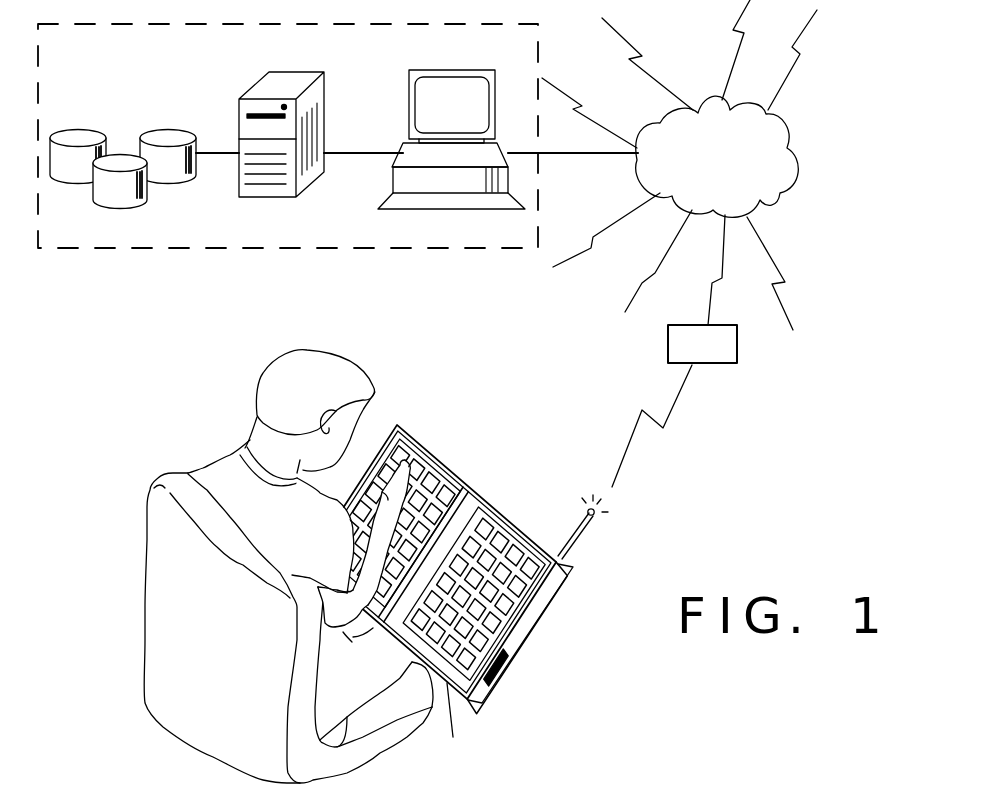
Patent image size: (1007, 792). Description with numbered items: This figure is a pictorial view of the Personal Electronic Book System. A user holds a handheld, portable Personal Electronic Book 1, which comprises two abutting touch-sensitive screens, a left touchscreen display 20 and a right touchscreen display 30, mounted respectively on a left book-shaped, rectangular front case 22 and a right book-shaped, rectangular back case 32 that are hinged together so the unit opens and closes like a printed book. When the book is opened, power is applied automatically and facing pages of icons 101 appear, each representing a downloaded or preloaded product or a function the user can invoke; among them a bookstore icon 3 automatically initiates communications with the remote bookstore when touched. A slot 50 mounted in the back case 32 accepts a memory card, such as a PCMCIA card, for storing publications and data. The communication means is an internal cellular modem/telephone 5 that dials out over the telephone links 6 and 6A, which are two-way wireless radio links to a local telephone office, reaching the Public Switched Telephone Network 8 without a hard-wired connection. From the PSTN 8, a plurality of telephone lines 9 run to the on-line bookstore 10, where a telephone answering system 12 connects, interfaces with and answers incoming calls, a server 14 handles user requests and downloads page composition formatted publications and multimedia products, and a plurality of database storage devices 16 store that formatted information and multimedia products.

The Personal Electronic Book 1 is at (445, 547).
The bookstore icon 3 is at (420, 450).
The internal cellular modem/telephone 5 is at (570, 543).
The communication link 6 is at (676, 330).
The communication link 6A is at (620, 37).
The Public Switched Telephone Network (PSTN) 8 is at (727, 161).
The telephone lines 9 is at (591, 154).
The on-line bookstore 10 is at (168, 250).
The telephone answering system 12 is at (403, 101).
The server 14 is at (248, 88).
The database storage devices 16 is at (163, 125).
The left touchscreen display 20 is at (391, 522).
The left front case 22 is at (350, 551).
The right touchscreen display 30 is at (474, 593).
The right back case 32 is at (527, 633).
The slot 50 is at (496, 667).
The icons 101 is at (423, 554).